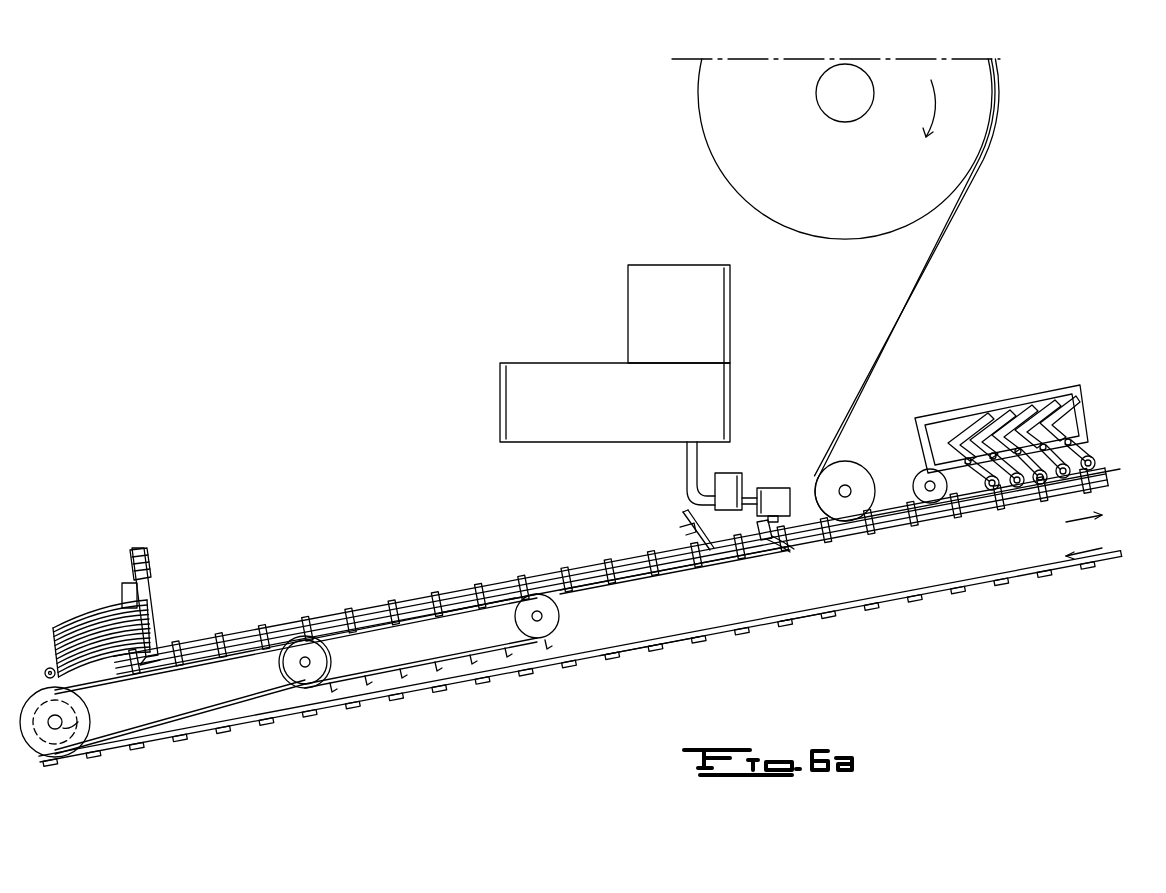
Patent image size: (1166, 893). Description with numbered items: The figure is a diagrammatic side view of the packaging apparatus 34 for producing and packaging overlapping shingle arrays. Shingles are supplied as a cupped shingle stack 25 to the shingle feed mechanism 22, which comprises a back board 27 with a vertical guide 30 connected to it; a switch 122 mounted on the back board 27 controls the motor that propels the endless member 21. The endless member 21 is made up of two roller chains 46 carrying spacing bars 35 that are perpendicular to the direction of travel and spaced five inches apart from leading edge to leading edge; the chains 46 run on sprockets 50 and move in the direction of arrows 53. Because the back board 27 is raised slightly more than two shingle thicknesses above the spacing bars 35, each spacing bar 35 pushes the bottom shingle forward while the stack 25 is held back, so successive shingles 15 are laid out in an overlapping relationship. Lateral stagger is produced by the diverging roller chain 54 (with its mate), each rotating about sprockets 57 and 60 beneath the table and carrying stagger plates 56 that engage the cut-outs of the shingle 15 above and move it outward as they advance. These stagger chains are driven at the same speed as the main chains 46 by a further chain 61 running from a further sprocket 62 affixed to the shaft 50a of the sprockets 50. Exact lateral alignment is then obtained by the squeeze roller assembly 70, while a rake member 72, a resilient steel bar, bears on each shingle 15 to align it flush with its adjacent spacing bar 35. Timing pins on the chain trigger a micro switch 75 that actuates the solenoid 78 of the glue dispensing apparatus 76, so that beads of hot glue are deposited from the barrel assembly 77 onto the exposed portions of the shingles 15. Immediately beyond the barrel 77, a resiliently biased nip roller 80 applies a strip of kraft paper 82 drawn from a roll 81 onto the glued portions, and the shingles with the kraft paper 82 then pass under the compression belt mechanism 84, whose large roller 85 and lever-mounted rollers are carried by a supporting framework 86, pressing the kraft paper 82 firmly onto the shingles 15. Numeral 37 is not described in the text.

The shingle 15 is at (386, 616).
The endless member 21 is at (1041, 592).
The shingle feed mechanism 22 is at (160, 602).
The shingle stack 25 is at (95, 613).
The back board 27 is at (158, 641).
The vertical guide 30 is at (122, 590).
The packaging apparatus 34 is at (960, 626).
The spacing bars 35 is at (282, 640).
The pivot roller 37 is at (45, 671).
The roller chains 46 is at (790, 628).
The sprockets 50 is at (86, 710).
The shaft 50a is at (60, 734).
The arrows 53 is at (1071, 524).
The roller chain 54 is at (498, 651).
The stagger plates 56 is at (398, 724).
The sprockets 57 is at (560, 632).
The sprockets 60 is at (317, 662).
The chain 61 is at (194, 719).
The sprocket 62 is at (80, 721).
The squeeze roller assembly 70 is at (672, 573).
The rake member 72 is at (683, 516).
The micro switch 75 is at (756, 529).
The glue dispensing apparatus 76 is at (627, 414).
The barrel assembly 77 is at (770, 495).
The solenoid 78 is at (728, 477).
The nip roller 80 is at (860, 468).
The roll 81 is at (858, 179).
The kraft paper 82 is at (898, 309).
The compression belt mechanism 84 is at (1033, 450).
The large roller 85 is at (914, 488).
The supporting framework 86 is at (952, 411).
The switch 122 is at (148, 552).